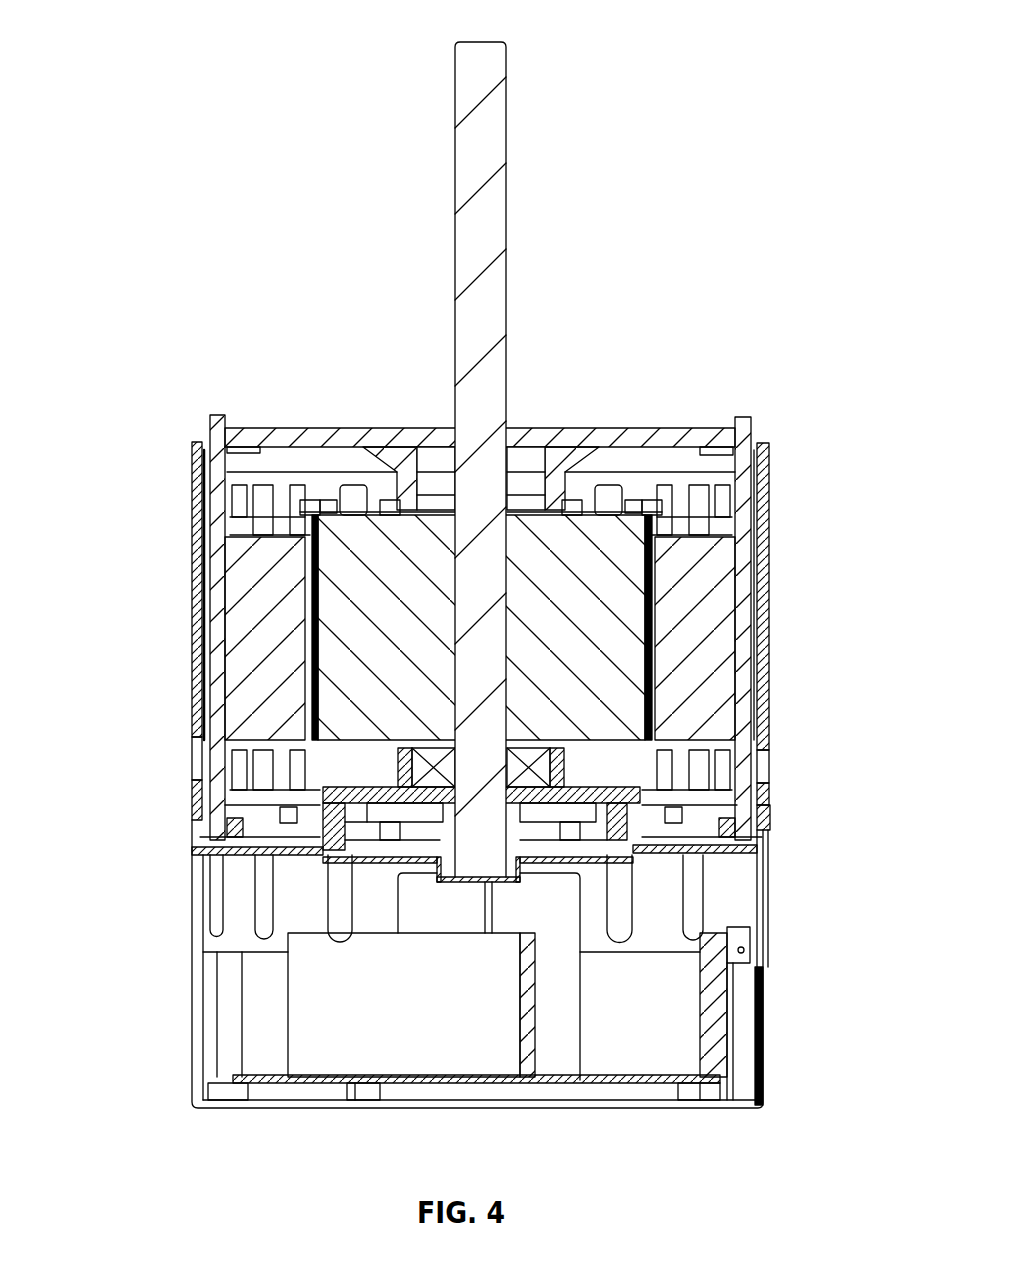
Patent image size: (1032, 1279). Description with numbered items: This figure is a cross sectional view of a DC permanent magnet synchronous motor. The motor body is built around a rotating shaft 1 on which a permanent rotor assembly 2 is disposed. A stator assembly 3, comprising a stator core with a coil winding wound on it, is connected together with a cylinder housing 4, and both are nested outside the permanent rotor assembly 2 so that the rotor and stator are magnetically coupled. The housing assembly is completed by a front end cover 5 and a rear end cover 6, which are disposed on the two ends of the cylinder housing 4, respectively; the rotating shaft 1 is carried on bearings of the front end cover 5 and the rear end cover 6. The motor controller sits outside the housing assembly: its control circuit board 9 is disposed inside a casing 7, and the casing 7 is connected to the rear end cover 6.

The rotating shaft 1 is at (583, 440).
The permanent rotor assembly 2 is at (590, 590).
The stator assembly 3 is at (536, 638).
The cylinder housing 4 is at (190, 710).
The front end cover 5 is at (480, 415).
The rear end cover 6 is at (548, 791).
The casing 7 is at (542, 964).
The control circuit board 9 is at (277, 1080).